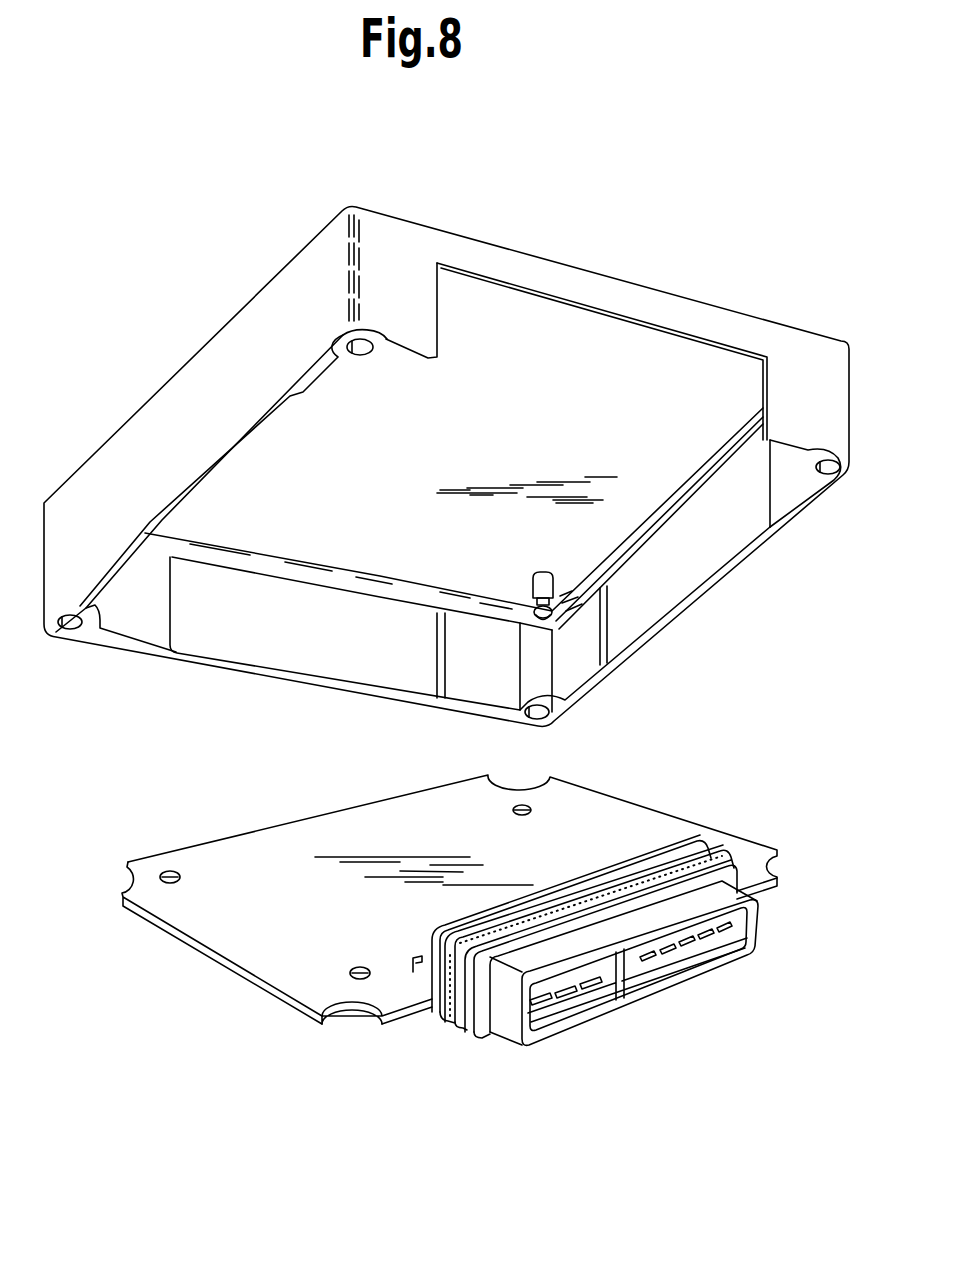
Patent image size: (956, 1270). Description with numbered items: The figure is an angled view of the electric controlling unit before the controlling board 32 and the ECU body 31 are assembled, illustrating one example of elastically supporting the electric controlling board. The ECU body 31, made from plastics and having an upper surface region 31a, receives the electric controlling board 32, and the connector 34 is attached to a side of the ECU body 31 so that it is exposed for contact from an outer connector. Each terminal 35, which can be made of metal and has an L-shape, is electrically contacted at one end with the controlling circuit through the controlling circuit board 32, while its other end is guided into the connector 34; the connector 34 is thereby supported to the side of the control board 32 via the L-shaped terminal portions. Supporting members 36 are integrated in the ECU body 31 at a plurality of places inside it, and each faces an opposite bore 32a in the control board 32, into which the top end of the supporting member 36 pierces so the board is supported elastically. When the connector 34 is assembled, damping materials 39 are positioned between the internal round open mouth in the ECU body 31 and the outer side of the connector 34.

The electric controlling unit body 31 is at (394, 214).
The top plate of case 31a is at (606, 335).
The electric controlling board 32 is at (652, 820).
The bore 32a is at (170, 870).
The connector 34 is at (757, 922).
The terminal 35 is at (664, 958).
The supporting member 36 is at (553, 594).
The damping materials 39 is at (722, 852).